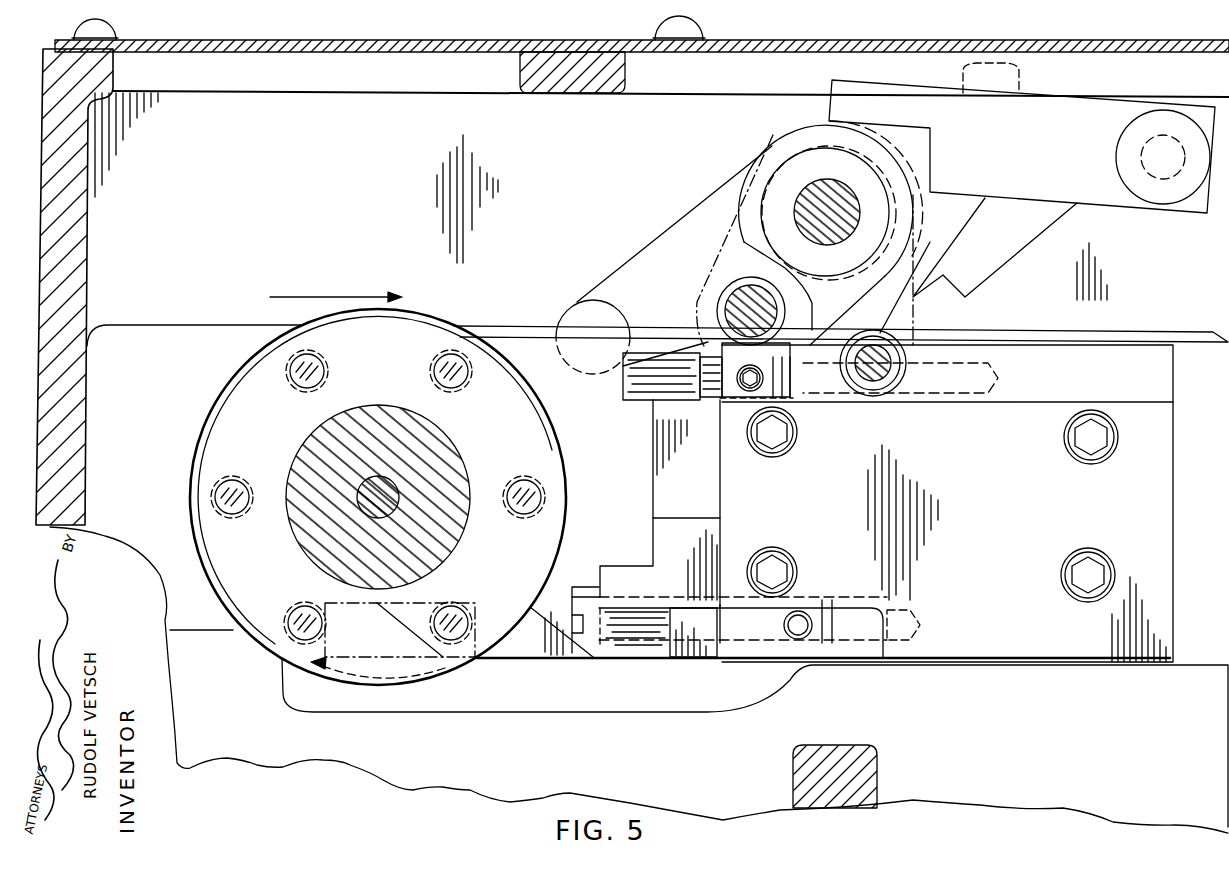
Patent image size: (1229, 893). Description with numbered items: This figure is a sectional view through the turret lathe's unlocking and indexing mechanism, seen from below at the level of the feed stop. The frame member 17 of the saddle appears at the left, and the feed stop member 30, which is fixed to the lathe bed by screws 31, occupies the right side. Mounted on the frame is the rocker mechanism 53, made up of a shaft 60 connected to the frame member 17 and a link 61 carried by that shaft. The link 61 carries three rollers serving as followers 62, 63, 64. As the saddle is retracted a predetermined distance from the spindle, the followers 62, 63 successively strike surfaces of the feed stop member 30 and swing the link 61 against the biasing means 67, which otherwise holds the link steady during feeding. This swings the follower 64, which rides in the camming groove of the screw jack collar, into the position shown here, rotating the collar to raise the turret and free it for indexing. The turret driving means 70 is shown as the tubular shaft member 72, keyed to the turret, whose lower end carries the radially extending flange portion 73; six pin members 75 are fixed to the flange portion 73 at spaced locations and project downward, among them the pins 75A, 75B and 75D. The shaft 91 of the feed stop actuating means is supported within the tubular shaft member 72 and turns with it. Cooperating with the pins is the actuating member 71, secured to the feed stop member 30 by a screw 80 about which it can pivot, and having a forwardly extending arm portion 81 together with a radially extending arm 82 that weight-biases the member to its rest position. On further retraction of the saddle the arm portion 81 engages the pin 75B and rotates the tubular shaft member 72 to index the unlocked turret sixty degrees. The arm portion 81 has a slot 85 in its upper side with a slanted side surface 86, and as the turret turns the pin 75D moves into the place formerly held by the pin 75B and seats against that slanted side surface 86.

The frame member 17 is at (88, 205).
The feed stop member 30 is at (1150, 532).
The screws 31 is at (786, 447).
The rocker mechanism 53 is at (672, 186).
The shaft 60 is at (821, 199).
The link 61 is at (640, 252).
The follower 62 is at (905, 330).
The follower 63 is at (787, 320).
The follower 64 is at (572, 305).
The biasing means 67 is at (1076, 204).
The turret driving means 70 is at (202, 388).
The actuating member 71 is at (581, 672).
The tubular shaft member 72 is at (430, 433).
The flange portion 73 is at (220, 538).
The pin members 75 is at (303, 378).
The pin member 75A is at (298, 612).
The pin member 75B is at (452, 612).
The pin member 75D is at (519, 490).
The screw 80 is at (587, 592).
The arm portion 81 is at (514, 659).
The arm 82 is at (653, 458).
The slot 85 is at (563, 613).
The slanted side surface 86 is at (398, 604).
The shaft 91 is at (392, 490).